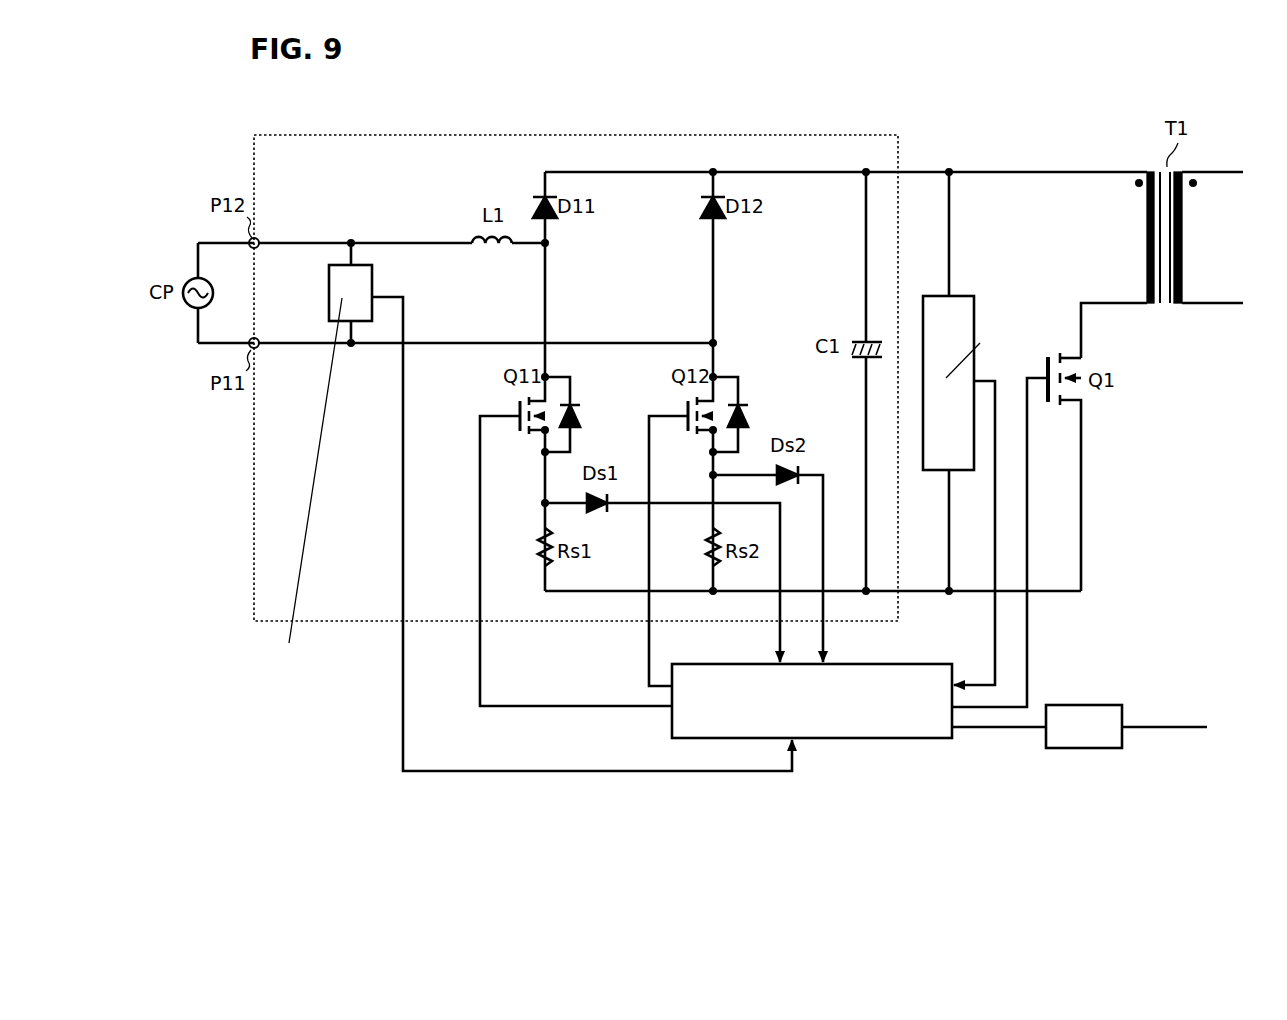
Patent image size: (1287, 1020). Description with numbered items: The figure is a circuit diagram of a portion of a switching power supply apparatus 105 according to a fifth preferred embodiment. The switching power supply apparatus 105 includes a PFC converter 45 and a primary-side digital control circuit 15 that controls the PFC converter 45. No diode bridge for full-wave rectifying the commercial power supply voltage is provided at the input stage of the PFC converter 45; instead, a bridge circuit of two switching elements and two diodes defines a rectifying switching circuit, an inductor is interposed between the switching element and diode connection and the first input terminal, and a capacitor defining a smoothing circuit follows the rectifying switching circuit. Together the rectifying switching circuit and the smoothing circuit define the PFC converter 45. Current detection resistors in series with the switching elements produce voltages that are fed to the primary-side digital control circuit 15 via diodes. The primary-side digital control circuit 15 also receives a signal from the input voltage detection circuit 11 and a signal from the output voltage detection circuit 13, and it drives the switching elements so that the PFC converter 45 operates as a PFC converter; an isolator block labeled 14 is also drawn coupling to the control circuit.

The switching power supply apparatus 105 is at (1233, 64).
The input voltage detection circuit 11 is at (373, 265).
The output voltage detection circuit 13 is at (975, 296).
The isolator 14 is at (1122, 706).
The primary-side digital control circuit 15 is at (907, 667).
The PFC converter 45 is at (601, 133).